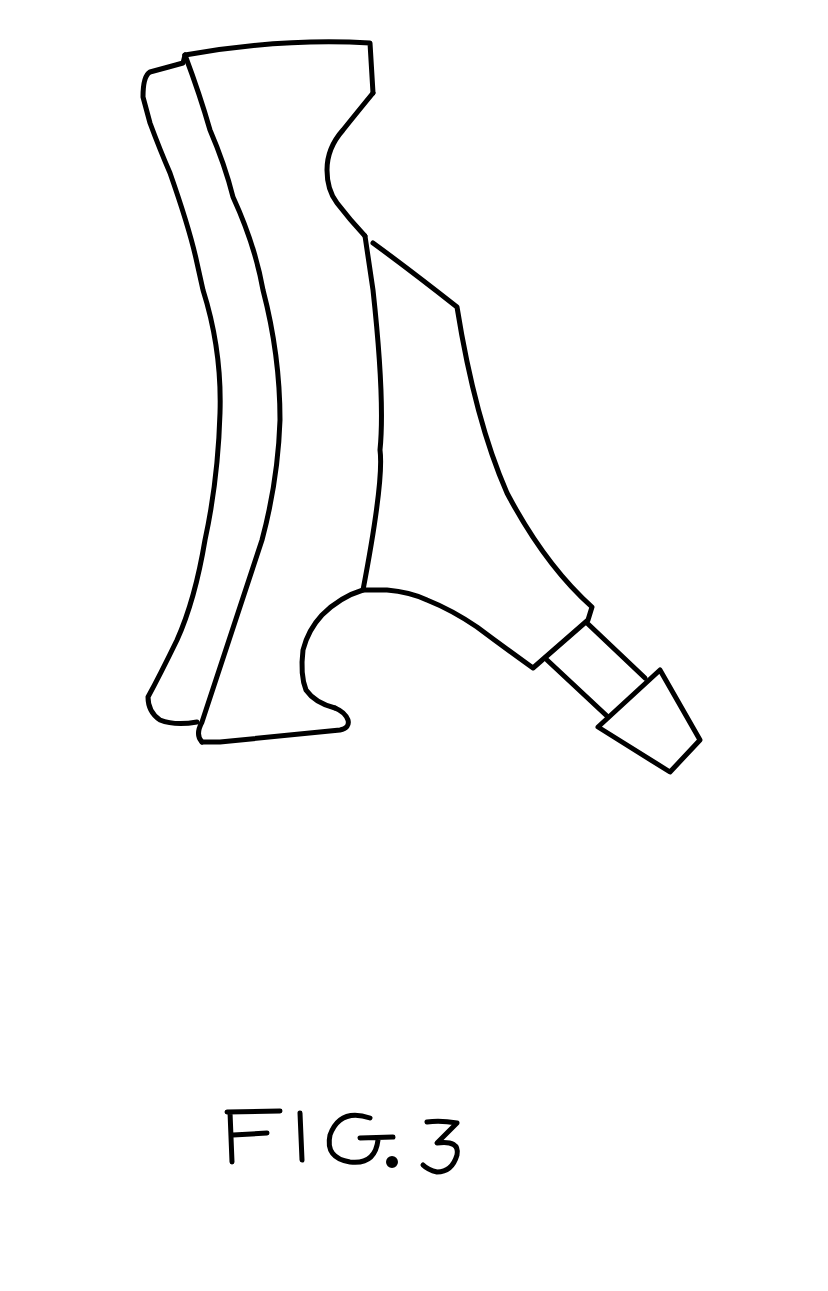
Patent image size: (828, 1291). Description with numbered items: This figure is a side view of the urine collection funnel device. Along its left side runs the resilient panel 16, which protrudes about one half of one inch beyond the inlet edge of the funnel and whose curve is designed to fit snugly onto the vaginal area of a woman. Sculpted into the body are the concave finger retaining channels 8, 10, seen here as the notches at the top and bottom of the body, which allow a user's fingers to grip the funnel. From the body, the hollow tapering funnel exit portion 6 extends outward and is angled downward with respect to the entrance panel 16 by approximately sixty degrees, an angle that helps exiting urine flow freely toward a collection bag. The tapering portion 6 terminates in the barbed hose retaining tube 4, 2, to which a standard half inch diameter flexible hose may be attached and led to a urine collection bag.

The barbed hose retaining tube 2 is at (668, 700).
The barbed hose retaining tube 4 is at (603, 653).
The hollow tapering portion 6 is at (477, 502).
The finger retaining channel 8 is at (422, 763).
The finger retaining channel 10 is at (347, 167).
The resilient panel 16 is at (233, 333).